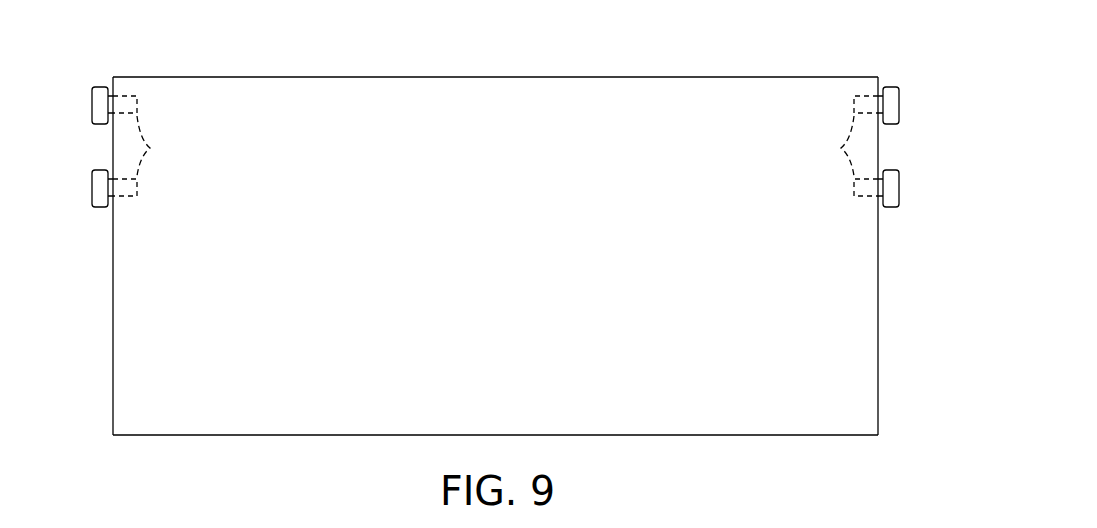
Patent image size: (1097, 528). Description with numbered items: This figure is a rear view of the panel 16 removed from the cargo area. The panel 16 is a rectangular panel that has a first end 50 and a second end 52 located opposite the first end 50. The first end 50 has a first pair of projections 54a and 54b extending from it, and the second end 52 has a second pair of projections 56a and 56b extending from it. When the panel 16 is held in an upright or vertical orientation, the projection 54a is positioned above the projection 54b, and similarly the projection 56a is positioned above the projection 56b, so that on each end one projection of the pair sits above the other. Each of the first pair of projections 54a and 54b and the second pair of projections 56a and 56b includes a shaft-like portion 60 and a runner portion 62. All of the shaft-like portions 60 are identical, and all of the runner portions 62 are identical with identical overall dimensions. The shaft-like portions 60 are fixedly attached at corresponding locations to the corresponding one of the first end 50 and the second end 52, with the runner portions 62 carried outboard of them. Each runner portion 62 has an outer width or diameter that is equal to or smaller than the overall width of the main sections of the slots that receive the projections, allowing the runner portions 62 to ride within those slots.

The panel 16 is at (606, 46).
The first end 50 is at (113, 353).
The second end 52 is at (878, 353).
The projection 54a is at (97, 110).
The projection 54b is at (97, 185).
The projection 56a is at (894, 110).
The projection 56b is at (894, 185).
The shaft-like portion 60 is at (155, 148).
The runner portion 62 is at (101, 93).